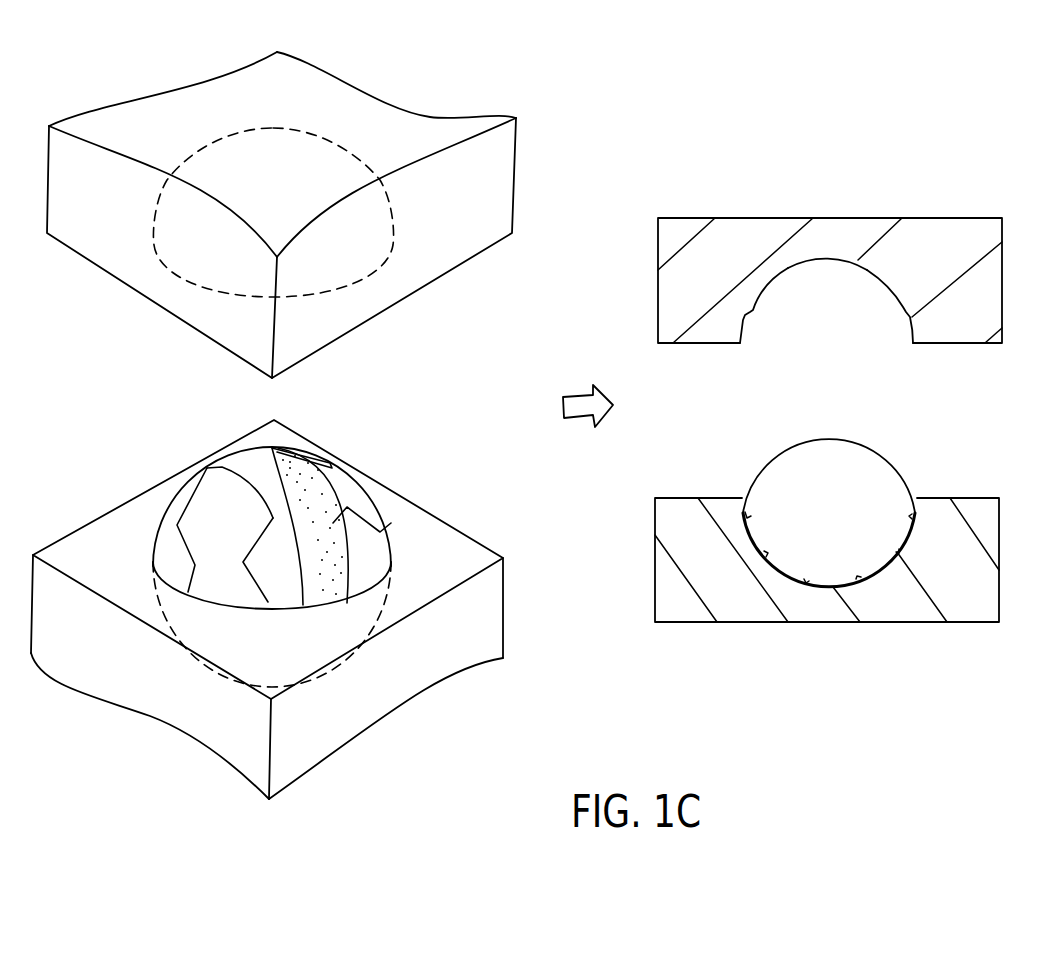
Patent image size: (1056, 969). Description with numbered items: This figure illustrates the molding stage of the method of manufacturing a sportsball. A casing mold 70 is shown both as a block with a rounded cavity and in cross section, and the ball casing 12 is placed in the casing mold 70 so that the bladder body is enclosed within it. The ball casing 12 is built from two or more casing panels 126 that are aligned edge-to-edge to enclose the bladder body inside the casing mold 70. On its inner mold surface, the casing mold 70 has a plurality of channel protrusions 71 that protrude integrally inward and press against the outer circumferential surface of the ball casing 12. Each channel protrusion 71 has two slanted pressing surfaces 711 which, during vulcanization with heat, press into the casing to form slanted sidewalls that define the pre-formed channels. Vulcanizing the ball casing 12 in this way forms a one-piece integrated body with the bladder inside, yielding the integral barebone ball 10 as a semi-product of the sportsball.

The casing mold 70 is at (202, 112).
The ball casing 12 is at (170, 457).
The casing panels 126 is at (219, 580).
The barebone ball 10 is at (923, 447).
The channel protrusions 71 is at (788, 268).
The slanted pressing surfaces 711 is at (870, 276).